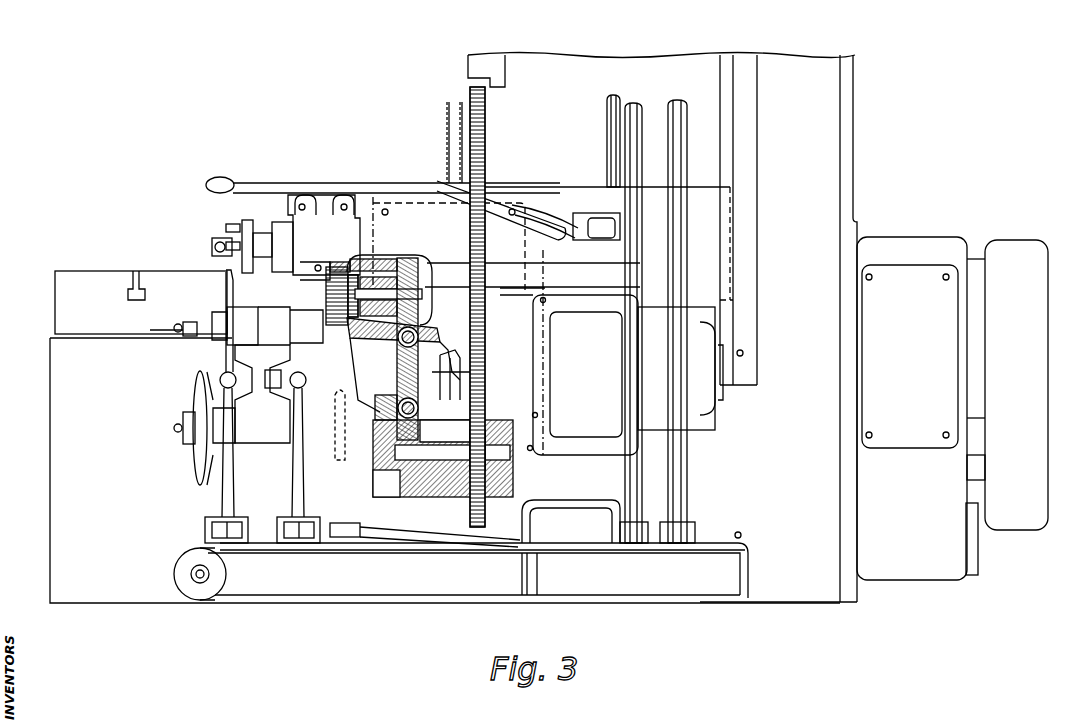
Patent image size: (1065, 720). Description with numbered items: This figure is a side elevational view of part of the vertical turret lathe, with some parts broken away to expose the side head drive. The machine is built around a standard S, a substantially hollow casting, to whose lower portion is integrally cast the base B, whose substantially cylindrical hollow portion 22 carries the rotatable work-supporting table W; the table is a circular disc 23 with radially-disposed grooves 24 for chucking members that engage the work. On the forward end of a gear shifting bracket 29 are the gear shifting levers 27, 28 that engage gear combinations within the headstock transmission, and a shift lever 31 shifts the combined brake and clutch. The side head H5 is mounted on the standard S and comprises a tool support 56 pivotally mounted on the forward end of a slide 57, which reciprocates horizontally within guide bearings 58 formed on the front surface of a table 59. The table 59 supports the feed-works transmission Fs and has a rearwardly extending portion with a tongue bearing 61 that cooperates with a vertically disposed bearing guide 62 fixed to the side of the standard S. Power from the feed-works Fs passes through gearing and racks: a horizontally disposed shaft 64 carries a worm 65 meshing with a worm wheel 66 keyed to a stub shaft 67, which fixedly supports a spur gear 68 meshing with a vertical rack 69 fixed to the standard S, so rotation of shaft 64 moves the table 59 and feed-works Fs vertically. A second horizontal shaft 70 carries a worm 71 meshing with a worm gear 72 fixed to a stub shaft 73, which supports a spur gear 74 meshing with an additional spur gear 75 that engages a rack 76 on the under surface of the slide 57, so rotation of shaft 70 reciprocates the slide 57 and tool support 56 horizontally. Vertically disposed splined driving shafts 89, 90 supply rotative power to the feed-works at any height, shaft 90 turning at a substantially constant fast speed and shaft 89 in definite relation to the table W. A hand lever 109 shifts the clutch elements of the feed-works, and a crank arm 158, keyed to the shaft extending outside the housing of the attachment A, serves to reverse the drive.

The standard S is at (808, 178).
The base B is at (122, 588).
The work-supporting table W is at (112, 285).
The attachment A is at (455, 222).
The side head H5 is at (288, 232).
The feed-works transmission Fs is at (385, 490).
The cylindrical hollow portion 22 is at (52, 395).
The circular disc 23 is at (160, 278).
The radially-disposed grooves 24 is at (128, 300).
The gear shifting lever 27 is at (220, 374).
The gear shifting lever 28 is at (306, 377).
The gear shifting bracket 29 is at (178, 575).
The shift lever 31 is at (355, 523).
The tool support 56 is at (248, 220).
The slide 57 is at (282, 273).
The guide bearings 58 is at (320, 196).
The table 59 is at (548, 187).
The tongue bearing 61 is at (733, 233).
The bearing guide 62 is at (740, 176).
The shaft 64 is at (378, 410).
The worm 65 is at (398, 400).
The worm wheel 66 is at (375, 485).
The stub shaft 67 is at (440, 470).
The spur gear 68 is at (498, 470).
The rack 69 is at (485, 125).
The shaft 70 is at (420, 330).
The worm 71 is at (434, 350).
The worm gear 72 is at (416, 268).
The stub shaft 73 is at (425, 291).
The spur gear 74 is at (324, 305).
The spur gear 75 is at (335, 322).
The rack 76 is at (340, 262).
The driving shaft 89 is at (645, 160).
The driving shaft 90 is at (690, 160).
The hand lever 109 is at (174, 428).
The crank arm 158 is at (336, 428).